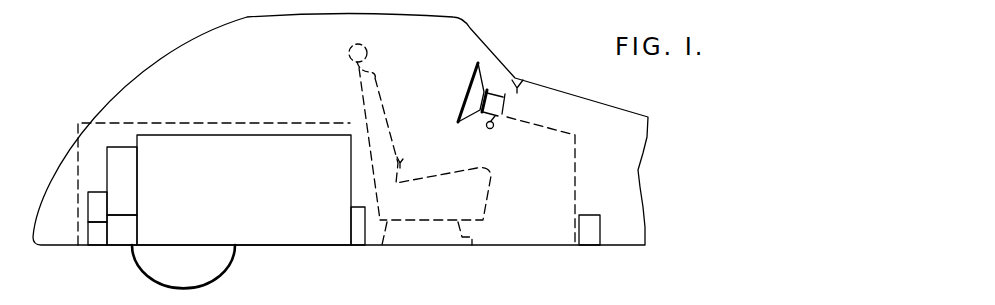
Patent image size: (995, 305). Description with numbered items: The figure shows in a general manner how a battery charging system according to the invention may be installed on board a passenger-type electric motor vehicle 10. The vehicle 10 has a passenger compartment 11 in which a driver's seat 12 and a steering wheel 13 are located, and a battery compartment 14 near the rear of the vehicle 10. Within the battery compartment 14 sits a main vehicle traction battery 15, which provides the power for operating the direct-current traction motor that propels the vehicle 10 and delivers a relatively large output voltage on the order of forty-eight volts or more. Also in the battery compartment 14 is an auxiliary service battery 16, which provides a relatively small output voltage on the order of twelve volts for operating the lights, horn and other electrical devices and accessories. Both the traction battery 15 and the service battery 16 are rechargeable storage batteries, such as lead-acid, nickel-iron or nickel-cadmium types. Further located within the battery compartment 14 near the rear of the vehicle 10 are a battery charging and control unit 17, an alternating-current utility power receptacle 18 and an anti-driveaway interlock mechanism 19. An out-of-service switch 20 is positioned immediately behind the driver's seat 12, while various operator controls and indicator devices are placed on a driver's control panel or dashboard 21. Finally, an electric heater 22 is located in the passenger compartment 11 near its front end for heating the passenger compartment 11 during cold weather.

The electric motor vehicle 10 is at (135, 53).
The passenger compartment 11 is at (414, 51).
The driver's seat 12 is at (400, 156).
The steering wheel 13 is at (466, 97).
The battery compartment 14 is at (240, 121).
The main vehicle traction battery 15 is at (287, 232).
The auxiliary service battery 16 is at (122, 233).
The battery charging and control unit 17 is at (117, 170).
The alternating-current utility power receptacle 18 is at (97, 210).
The anti-driveaway interlock mechanism 19 is at (97, 237).
The out-of-service switch 20 is at (357, 235).
The driver's control panel 21 is at (524, 83).
The electric heater 22 is at (590, 237).